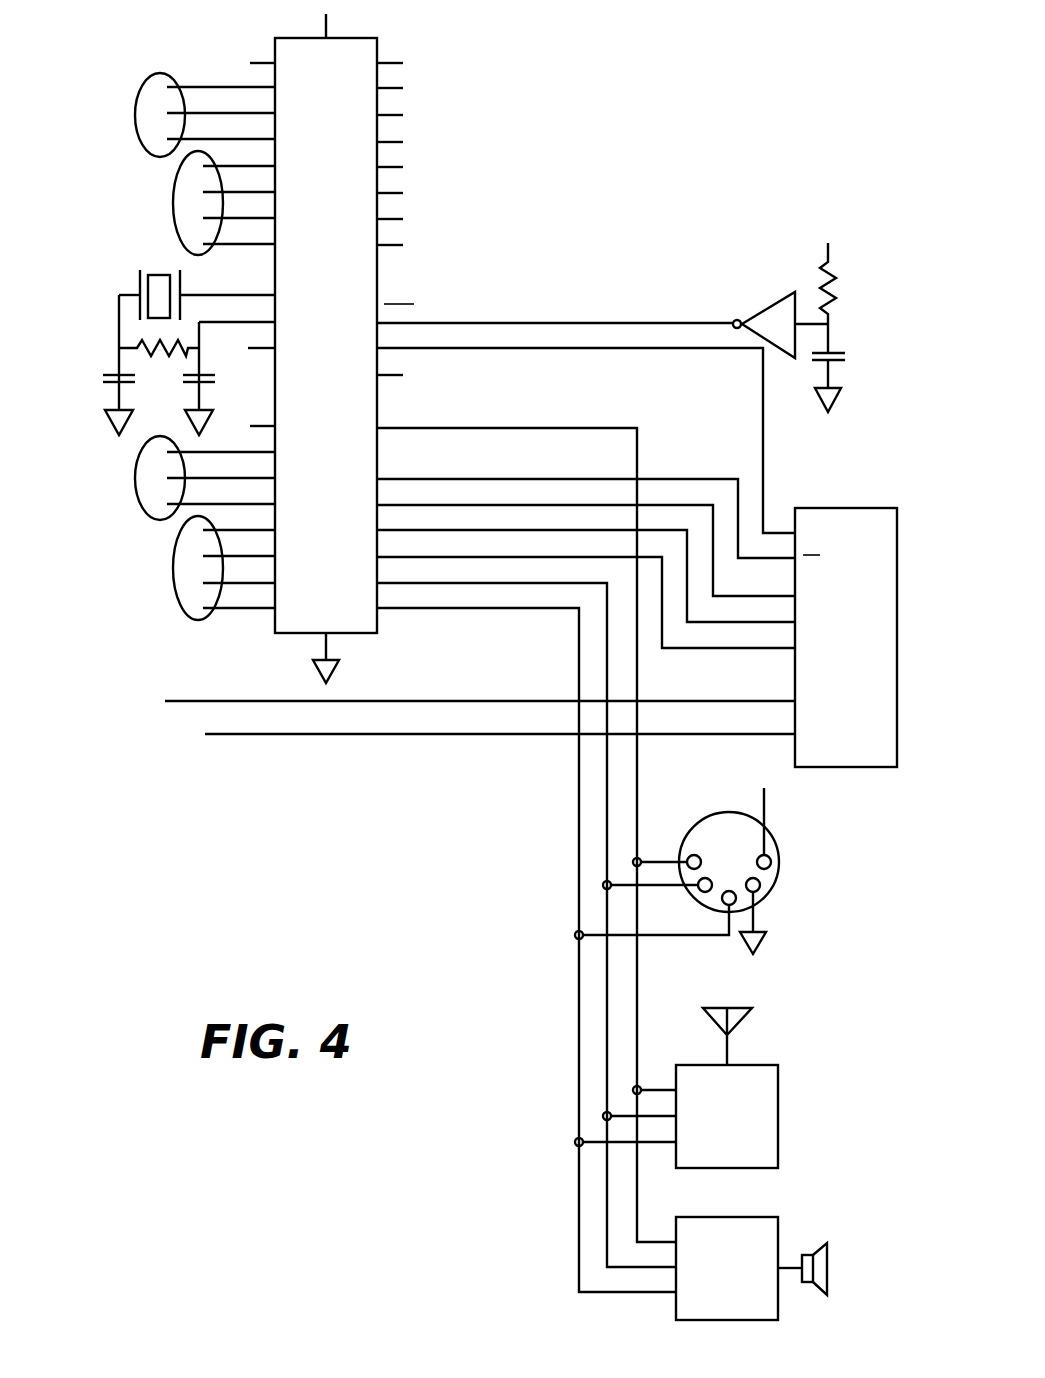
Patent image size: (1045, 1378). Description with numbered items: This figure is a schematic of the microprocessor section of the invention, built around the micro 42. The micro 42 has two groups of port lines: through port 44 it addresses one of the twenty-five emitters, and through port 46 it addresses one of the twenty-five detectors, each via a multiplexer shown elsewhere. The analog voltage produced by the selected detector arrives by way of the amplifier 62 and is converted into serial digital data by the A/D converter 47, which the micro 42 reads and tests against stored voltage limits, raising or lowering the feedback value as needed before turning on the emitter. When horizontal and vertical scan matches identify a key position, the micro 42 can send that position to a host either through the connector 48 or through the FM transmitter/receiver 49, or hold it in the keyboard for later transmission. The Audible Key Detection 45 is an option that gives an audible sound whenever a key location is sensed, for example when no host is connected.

The micro 42 is at (378, 125).
The port 44 is at (140, 90).
The port 46 is at (175, 590).
The A/D converter 47 is at (822, 506).
The connector 48 is at (780, 852).
The FM transmitter/receiver 49 is at (778, 1078).
The Audible Key Detection 45 is at (778, 1233).
The amplifier 62 is at (441, 736).